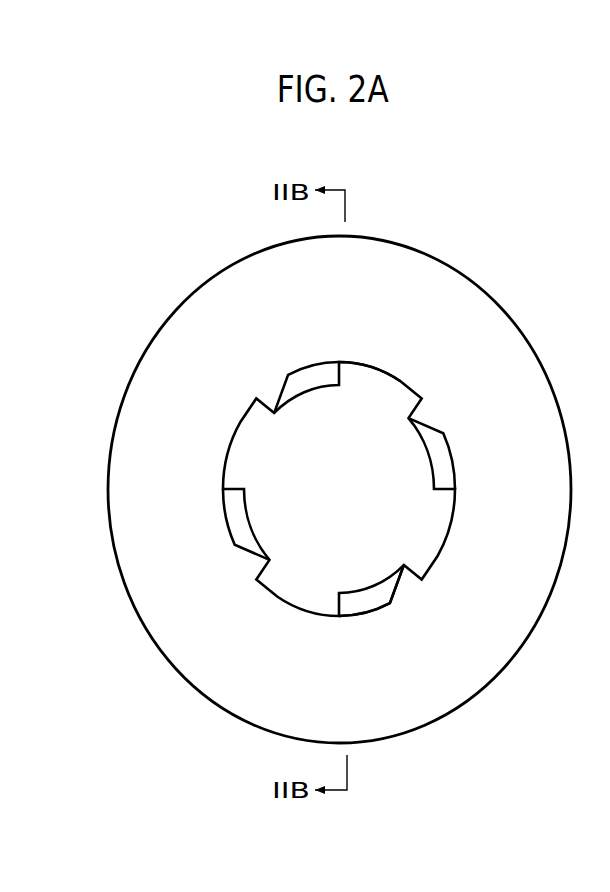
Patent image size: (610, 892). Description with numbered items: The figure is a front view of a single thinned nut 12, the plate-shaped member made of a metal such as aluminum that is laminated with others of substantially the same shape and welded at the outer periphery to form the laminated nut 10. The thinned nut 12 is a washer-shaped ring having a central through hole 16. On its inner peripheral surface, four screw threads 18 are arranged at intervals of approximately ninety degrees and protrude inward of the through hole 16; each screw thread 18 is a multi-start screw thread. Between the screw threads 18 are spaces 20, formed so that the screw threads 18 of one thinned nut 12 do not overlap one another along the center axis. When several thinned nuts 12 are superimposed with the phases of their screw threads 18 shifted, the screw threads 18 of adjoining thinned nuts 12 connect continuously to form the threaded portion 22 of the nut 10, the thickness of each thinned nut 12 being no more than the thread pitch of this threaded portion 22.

The nut 10 is at (339, 474).
The thinned nut 12 is at (178, 307).
The through hole 16 is at (375, 370).
The screw thread 18 is at (372, 600).
The space 20 is at (232, 444).
The threaded portion 22 is at (378, 574).